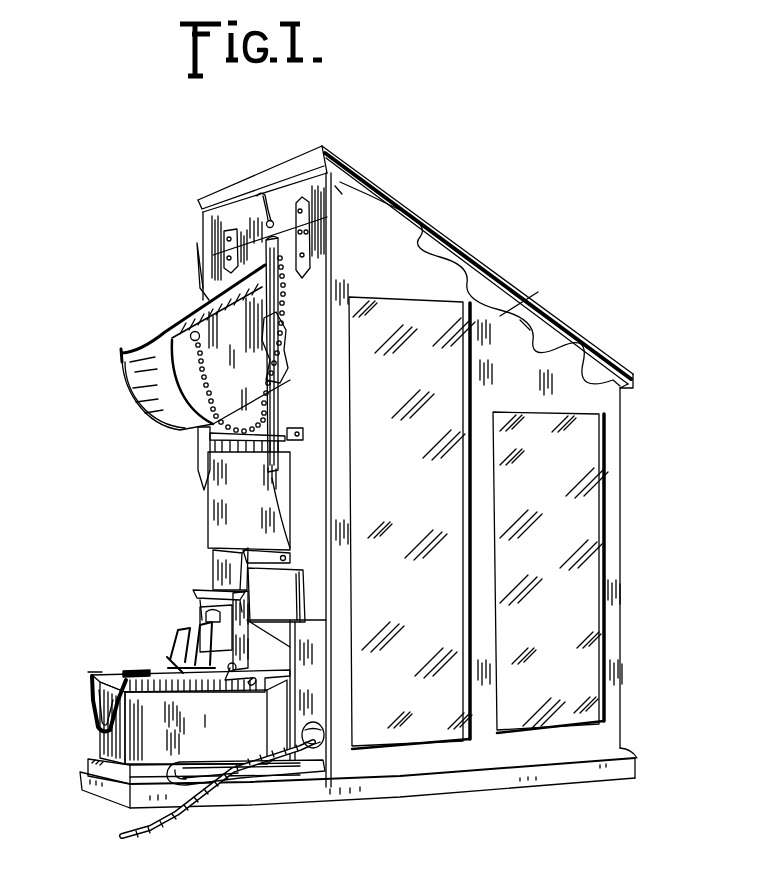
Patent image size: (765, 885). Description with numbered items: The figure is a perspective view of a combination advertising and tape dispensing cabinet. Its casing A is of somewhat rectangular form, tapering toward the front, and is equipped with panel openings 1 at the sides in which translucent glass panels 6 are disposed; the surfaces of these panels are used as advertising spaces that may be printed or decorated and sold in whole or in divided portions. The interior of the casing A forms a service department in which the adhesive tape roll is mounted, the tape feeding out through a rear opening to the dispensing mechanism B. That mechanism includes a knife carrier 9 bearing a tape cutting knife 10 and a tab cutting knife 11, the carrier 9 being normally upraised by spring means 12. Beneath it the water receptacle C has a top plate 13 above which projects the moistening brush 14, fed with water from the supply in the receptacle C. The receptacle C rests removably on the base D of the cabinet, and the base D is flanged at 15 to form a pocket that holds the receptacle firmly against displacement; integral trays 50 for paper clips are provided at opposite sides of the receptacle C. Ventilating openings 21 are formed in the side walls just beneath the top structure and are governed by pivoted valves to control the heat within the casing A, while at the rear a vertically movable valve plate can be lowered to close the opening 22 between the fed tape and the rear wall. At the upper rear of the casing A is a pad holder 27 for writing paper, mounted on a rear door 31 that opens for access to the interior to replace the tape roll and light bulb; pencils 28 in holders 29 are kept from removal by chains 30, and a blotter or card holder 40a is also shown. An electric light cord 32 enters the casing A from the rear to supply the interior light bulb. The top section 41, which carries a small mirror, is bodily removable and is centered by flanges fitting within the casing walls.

The panel openings 1 is at (602, 522).
The glass panels 6 is at (585, 663).
The knife carrier 9 is at (227, 563).
The tape cutting knife 10 is at (203, 595).
The tab cutting knife 11 is at (207, 618).
The spring means 12 is at (240, 682).
The top plate 13 is at (147, 688).
The moistening brush 14 is at (131, 671).
The flange 15 is at (90, 765).
The ventilating openings 21 is at (420, 237).
The opening 22 is at (265, 633).
The pad holder 27 is at (172, 380).
The pencils 28 is at (197, 277).
The holders 29 is at (263, 343).
The chains 30 is at (210, 407).
The rear door 31 is at (313, 493).
The electric light cord 32 is at (180, 817).
The blotter or card holder 40a is at (223, 507).
The top section 41 is at (400, 213).
The trays 50 is at (257, 770).
The casing A is at (530, 288).
The dispensing mechanism B is at (158, 629).
The water receptacle C is at (127, 787).
The base D is at (303, 803).